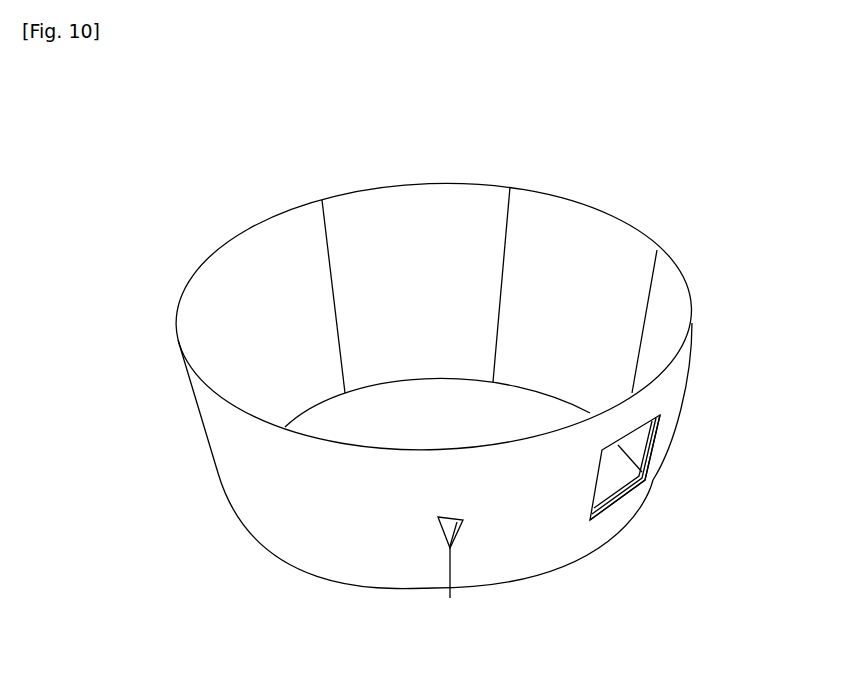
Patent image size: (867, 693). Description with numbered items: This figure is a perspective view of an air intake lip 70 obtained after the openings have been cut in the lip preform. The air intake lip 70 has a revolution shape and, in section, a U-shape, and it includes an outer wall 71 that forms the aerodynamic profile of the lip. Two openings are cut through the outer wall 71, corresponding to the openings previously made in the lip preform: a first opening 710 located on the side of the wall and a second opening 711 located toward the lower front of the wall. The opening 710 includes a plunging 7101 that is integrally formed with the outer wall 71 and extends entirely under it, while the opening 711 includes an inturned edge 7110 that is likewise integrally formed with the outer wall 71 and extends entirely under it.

The air intake lip 70 is at (261, 212).
The outer wall 71 is at (220, 437).
The opening 710 is at (630, 473).
The plunging 7101 is at (657, 445).
The inturned edge 7110 is at (455, 517).
The opening 711 is at (450, 598).